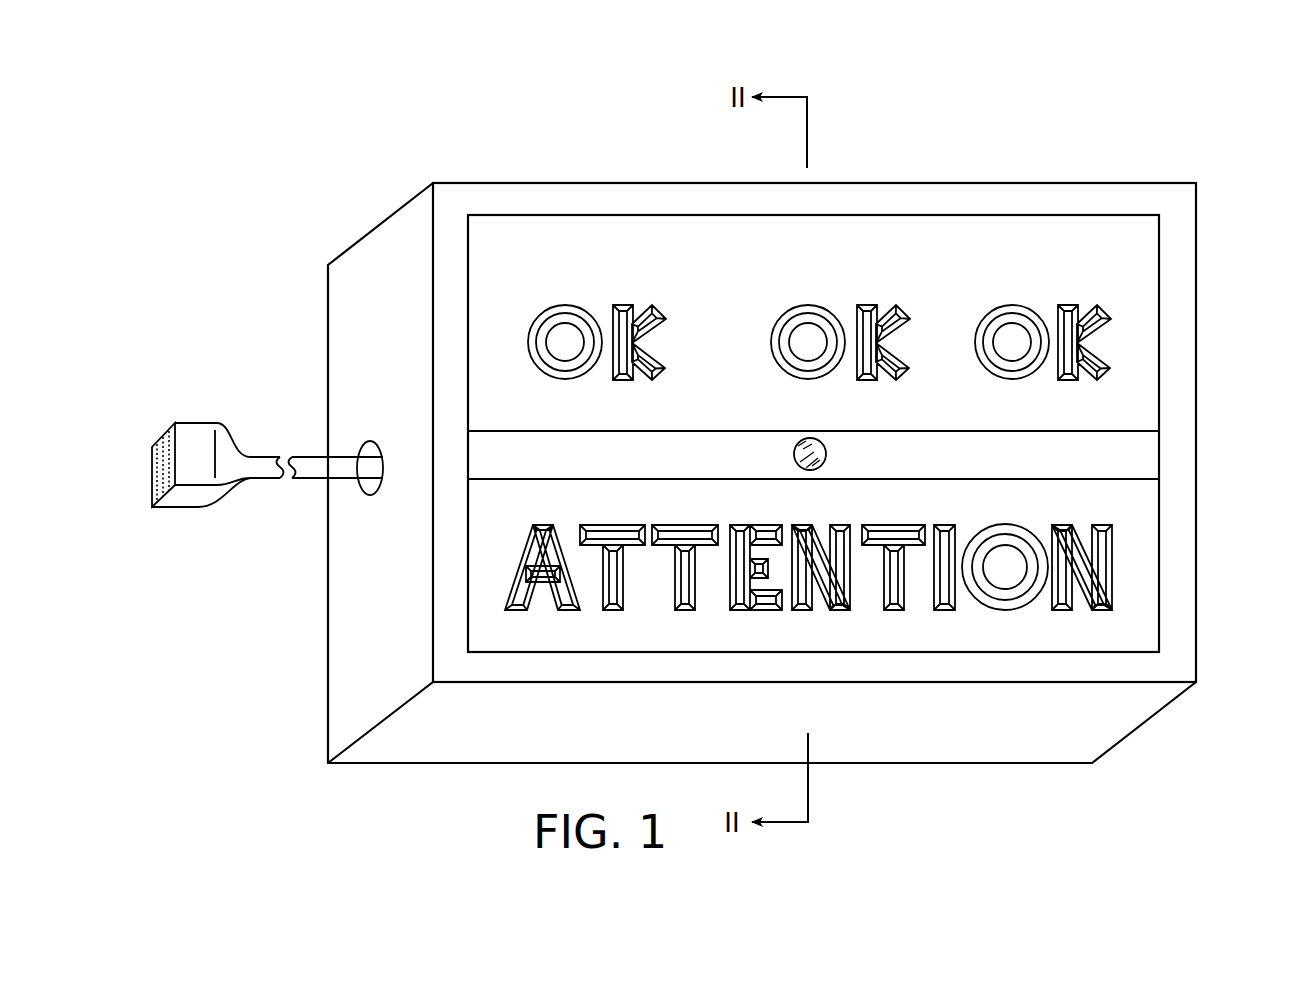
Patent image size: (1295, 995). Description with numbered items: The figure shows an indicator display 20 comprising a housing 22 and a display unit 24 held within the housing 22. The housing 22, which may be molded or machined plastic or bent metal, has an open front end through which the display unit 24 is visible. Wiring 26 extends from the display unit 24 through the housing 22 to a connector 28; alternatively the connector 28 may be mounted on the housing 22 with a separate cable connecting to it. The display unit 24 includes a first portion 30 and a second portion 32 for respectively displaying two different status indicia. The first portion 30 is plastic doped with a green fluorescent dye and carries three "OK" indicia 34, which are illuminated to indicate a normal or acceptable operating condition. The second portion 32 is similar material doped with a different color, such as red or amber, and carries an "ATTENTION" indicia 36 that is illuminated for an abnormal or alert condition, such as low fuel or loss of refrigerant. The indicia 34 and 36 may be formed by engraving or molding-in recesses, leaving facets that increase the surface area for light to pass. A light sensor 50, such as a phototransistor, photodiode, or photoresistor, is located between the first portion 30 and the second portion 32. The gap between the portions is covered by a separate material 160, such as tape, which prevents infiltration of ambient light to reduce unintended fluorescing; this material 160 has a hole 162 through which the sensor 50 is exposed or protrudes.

The indicator display 20 is at (1031, 133).
The housing 22 is at (1206, 275).
The display unit 24 is at (868, 253).
The wiring 26 is at (316, 436).
The connector 28 is at (141, 521).
The first portion 30 is at (1102, 289).
The second portion 32 is at (875, 621).
The indicia 34 is at (554, 306).
The indicia 36 is at (613, 592).
The light sensor 50 is at (804, 476).
The separate material 160 is at (1133, 460).
The hole 162 is at (797, 466).